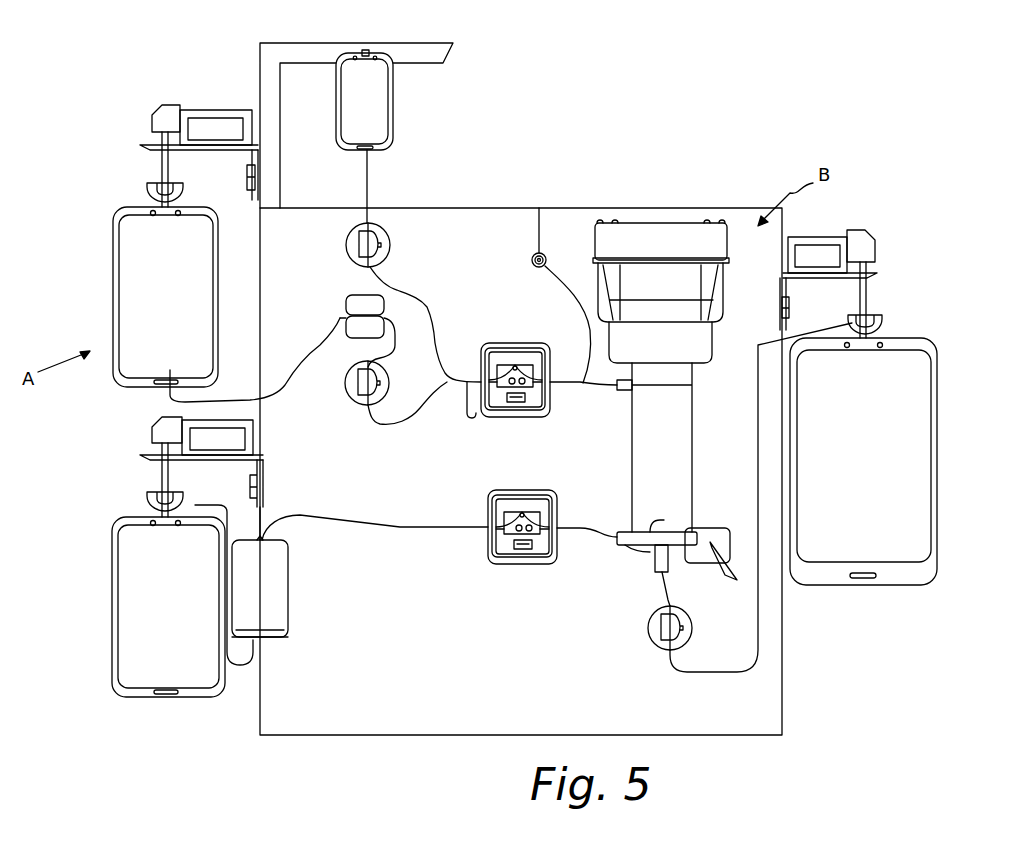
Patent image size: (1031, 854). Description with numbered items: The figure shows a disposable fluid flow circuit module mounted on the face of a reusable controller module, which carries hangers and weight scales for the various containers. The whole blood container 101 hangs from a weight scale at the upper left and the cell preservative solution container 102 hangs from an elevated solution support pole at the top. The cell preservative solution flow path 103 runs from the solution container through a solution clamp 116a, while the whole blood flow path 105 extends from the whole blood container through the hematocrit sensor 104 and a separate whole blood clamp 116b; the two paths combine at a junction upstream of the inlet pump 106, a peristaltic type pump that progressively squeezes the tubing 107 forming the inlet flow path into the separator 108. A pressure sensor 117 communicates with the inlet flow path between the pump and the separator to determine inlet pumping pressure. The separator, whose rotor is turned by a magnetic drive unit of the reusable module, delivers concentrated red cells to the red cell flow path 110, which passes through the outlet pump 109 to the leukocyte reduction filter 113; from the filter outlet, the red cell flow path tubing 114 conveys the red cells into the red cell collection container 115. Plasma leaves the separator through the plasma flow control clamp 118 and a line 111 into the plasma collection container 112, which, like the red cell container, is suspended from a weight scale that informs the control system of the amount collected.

The whole blood container 101 is at (113, 251).
The cell preservative solution container 102 is at (393, 80).
The cell preservative solution flow path 103 is at (367, 167).
The hematocrit sensor 104 is at (346, 299).
The whole blood flow path 105 is at (283, 390).
The inlet pump 106 is at (503, 418).
The tubing 107 is at (468, 390).
The separator 108 is at (692, 412).
The outlet pump 109 is at (507, 565).
The red cell flow path 110 is at (405, 530).
The tube 111 is at (758, 617).
The plasma collection container 112 is at (937, 495).
The leukocyte reduction filter 113 is at (288, 572).
The red cell flow path tubing 114 is at (237, 667).
The red cell collection container 115 is at (112, 570).
The solution clamp 116a is at (390, 240).
The whole blood clamp 116b is at (352, 402).
The pressure sensor 117 is at (537, 222).
The plasma flow control clamp 118 is at (648, 626).